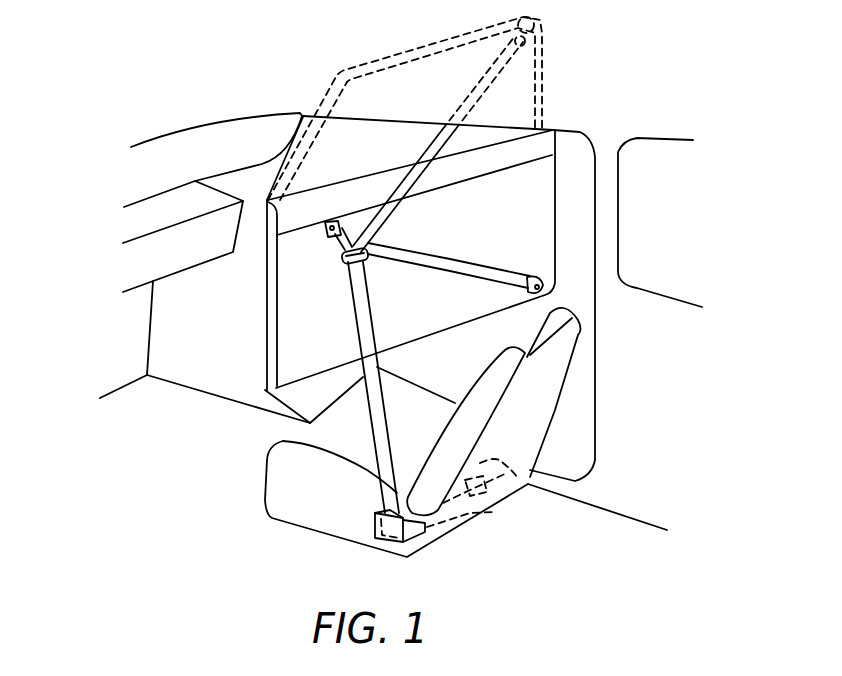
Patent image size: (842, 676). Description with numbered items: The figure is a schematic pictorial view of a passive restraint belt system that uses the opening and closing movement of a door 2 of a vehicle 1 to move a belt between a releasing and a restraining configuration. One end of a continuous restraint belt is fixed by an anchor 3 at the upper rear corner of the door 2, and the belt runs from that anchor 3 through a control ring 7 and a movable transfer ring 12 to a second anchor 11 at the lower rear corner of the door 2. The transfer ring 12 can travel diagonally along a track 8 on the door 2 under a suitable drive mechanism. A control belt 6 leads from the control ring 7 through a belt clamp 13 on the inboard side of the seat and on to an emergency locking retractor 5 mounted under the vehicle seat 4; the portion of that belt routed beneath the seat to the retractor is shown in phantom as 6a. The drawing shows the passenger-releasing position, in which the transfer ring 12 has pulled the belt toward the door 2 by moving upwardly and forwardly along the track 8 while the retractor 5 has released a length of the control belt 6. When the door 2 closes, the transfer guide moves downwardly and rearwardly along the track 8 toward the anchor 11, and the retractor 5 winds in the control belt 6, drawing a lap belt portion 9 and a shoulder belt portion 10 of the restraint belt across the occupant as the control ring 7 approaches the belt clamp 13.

The vehicle 1 is at (193, 367).
The door 2 is at (543, 177).
The anchor 3 is at (545, 28).
The vehicle seat 4 is at (277, 506).
The emergency locking retractor 5 is at (502, 463).
The control belt 6 is at (373, 406).
The belt portion under seat 6a is at (447, 514).
The control ring 7 is at (343, 260).
The track 8 is at (391, 243).
The lap belt portion 9 is at (458, 263).
The shoulder belt portion 10 is at (430, 153).
The anchor 11 is at (552, 287).
The transfer ring 12 is at (331, 222).
The belt clamp 13 is at (372, 542).